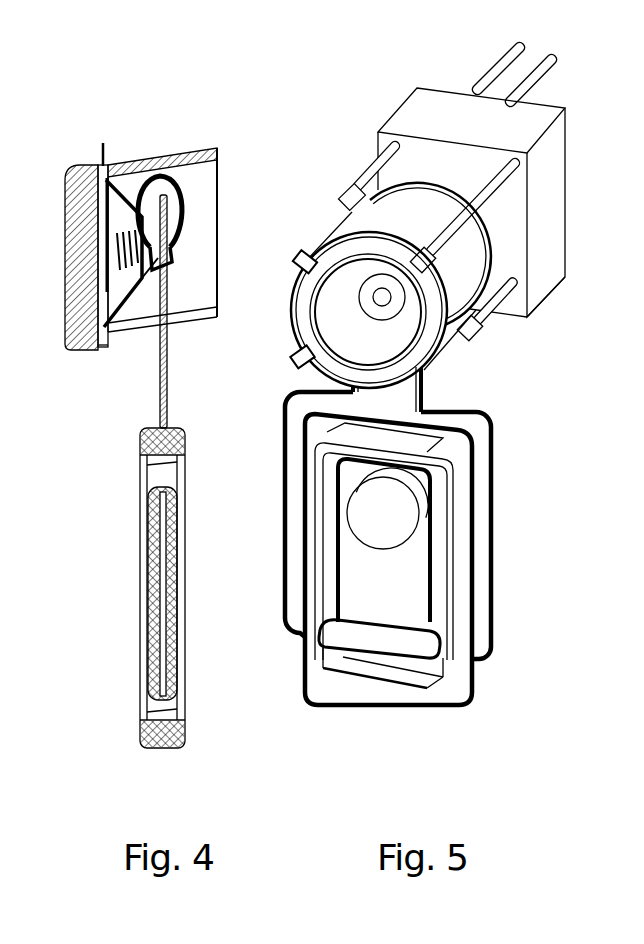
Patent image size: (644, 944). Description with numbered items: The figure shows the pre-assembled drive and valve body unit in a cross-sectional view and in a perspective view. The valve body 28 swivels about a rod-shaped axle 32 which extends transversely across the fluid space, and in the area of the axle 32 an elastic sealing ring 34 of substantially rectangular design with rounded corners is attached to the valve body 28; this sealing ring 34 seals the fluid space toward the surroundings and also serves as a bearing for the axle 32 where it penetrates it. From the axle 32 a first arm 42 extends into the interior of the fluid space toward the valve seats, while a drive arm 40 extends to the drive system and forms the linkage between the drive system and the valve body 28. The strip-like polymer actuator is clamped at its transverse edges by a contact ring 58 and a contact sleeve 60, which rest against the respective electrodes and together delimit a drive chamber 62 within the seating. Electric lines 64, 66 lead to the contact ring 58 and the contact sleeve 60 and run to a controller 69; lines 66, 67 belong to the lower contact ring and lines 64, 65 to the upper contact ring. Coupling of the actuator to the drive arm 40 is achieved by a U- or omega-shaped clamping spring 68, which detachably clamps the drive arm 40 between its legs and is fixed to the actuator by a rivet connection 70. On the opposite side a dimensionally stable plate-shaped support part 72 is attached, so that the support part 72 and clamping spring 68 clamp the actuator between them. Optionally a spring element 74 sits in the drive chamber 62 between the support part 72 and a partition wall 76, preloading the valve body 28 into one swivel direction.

In FIG. 4, the valve body 28 is at (130, 594).
In FIG. 5, the valve body 28 is at (505, 537).
In FIG. 5, the rod-shaped axle 32 is at (455, 655).
In FIG. 4, the sealing ring 34 is at (185, 428).
In FIG. 5, the sealing ring 34 is at (453, 500).
In FIG. 4, the drive arm 40 is at (170, 363).
In FIG. 5, the drive arm 40 is at (422, 388).
In FIG. 4, the first arm 42 is at (148, 535).
In FIG. 5, the first arm 42 is at (387, 612).
In FIG. 4, the contact ring 58 is at (102, 150).
In FIG. 5, the contact ring 58 is at (312, 270).
In FIG. 4, the contact sleeve 60 is at (130, 163).
In FIG. 5, the contact sleeve 60 is at (345, 230).
In FIG. 4, the drive chamber 62 is at (210, 185).
In FIG. 5, the electric line 64 is at (500, 190).
In FIG. 5, the electric line 65 is at (297, 355).
In FIG. 5, the electric line 66 is at (486, 314).
In FIG. 5, the electric line 67 is at (363, 173).
In FIG. 4, the clamping spring 68 is at (170, 178).
In FIG. 5, the controller 69 is at (557, 248).
In FIG. 4, the rivet connection 70 is at (143, 290).
In FIG. 4, the support part 72 is at (65, 324).
In FIG. 4, the spring element 74 is at (98, 250).
In FIG. 4, the partition wall 76 is at (65, 206).